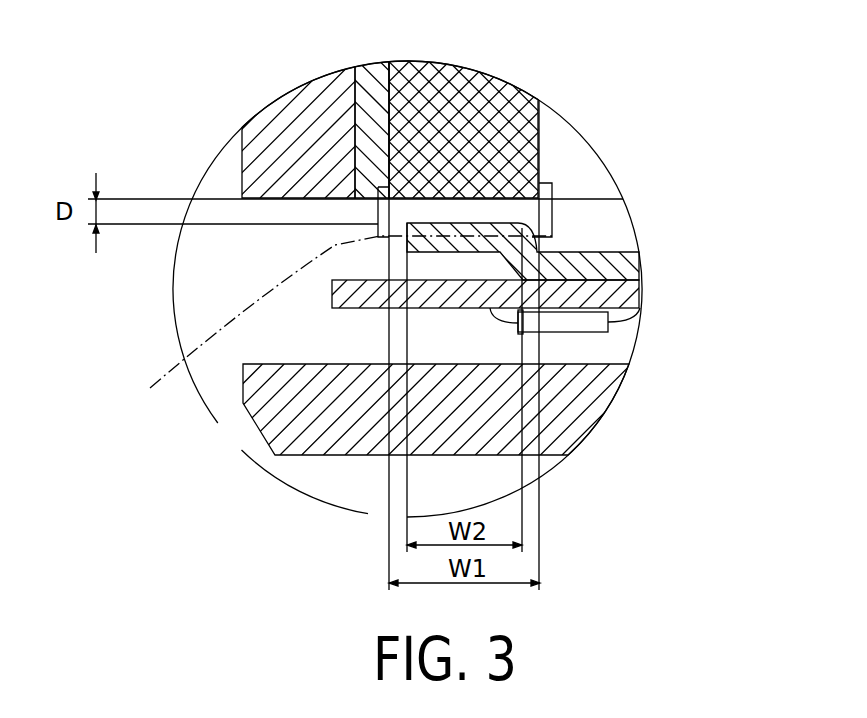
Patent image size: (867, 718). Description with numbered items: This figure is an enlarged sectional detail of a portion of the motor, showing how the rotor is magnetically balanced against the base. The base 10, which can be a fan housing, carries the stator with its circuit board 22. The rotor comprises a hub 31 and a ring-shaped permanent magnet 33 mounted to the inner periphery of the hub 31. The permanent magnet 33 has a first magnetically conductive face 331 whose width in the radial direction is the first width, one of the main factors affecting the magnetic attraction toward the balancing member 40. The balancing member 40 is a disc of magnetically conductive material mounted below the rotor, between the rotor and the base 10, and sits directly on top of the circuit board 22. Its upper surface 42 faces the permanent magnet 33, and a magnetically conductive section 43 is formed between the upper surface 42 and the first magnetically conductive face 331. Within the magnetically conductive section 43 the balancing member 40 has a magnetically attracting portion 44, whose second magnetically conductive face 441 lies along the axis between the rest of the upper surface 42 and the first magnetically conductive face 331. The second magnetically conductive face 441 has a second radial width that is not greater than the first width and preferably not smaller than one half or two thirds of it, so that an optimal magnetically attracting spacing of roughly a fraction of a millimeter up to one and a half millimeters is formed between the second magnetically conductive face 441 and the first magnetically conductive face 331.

The base 10 is at (573, 402).
The circuit board 22 is at (640, 294).
The hub 31 is at (300, 132).
The permanent magnet 33 is at (498, 118).
The first magnetically conductive face 331 is at (533, 198).
The balancing member 40 is at (617, 267).
The upper surface 42 is at (607, 250).
The magnetically conductive section 43 is at (150, 388).
The magnetically attracting portion 44 is at (512, 326).
The second magnetically conductive face 441 is at (402, 212).